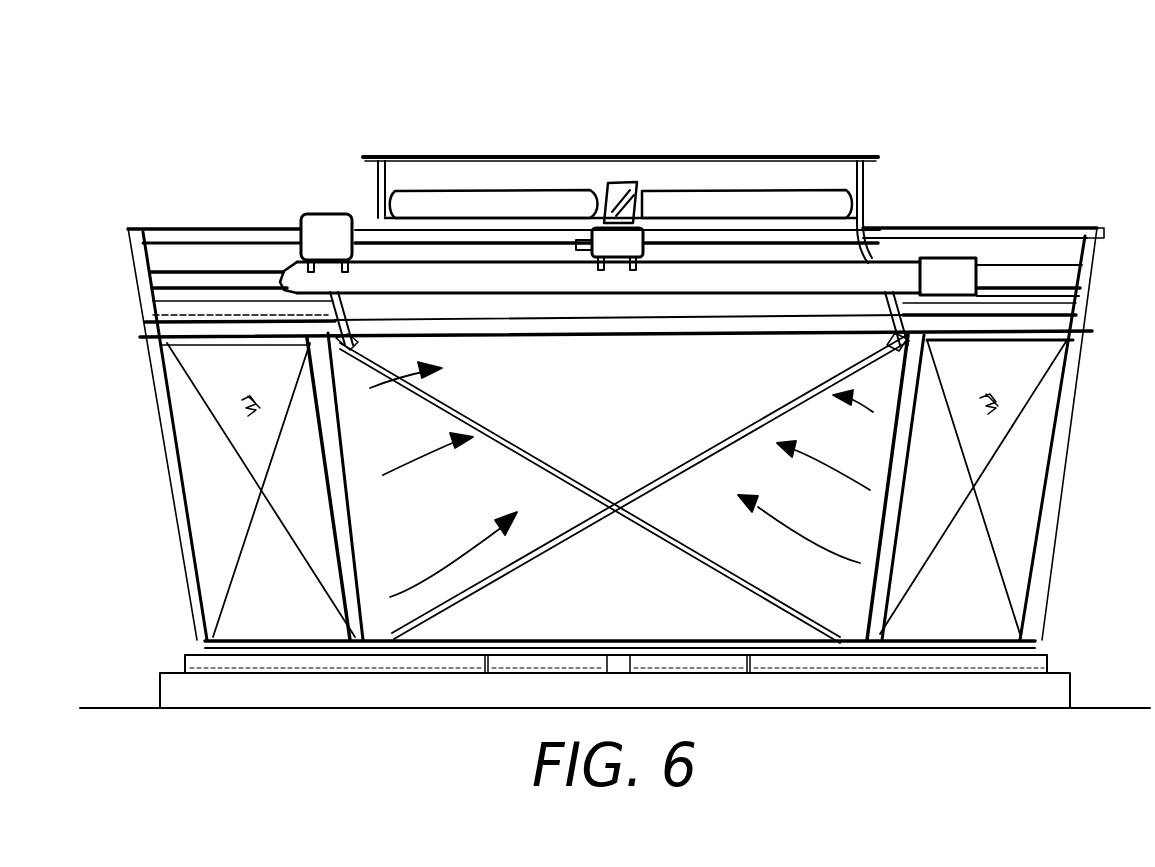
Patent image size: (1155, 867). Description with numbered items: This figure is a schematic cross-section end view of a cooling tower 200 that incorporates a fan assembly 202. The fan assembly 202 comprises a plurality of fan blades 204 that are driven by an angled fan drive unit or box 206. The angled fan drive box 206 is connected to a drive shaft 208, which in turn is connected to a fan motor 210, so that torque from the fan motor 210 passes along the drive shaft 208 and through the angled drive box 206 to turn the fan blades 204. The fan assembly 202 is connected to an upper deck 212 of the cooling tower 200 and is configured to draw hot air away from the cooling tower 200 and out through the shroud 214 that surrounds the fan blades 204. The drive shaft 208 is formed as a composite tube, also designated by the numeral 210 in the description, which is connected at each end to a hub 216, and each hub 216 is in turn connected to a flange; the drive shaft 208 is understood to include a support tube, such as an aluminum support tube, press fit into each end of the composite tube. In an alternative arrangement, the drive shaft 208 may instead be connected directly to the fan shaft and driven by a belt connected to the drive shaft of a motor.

The cooling tower 200 is at (302, 134).
The fan assembly 202 is at (727, 188).
The fan blades 204 is at (508, 196).
The angled fan drive unit or box 206 is at (640, 247).
The drive shaft 208 is at (530, 238).
The fan motor 210 is at (325, 235).
The upper deck 212 is at (908, 258).
The shroud 214 is at (860, 156).
The hub 216 is at (583, 233).